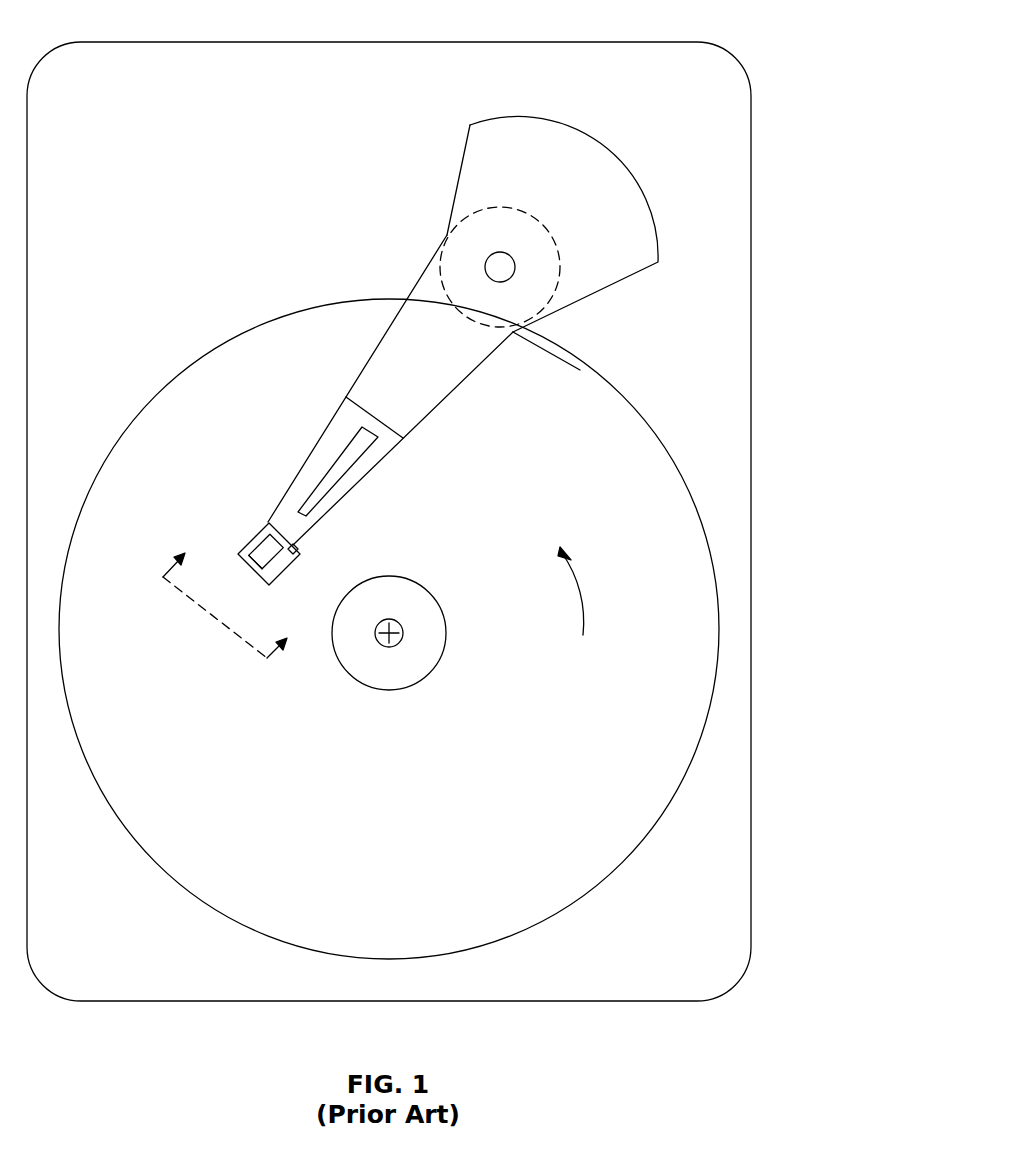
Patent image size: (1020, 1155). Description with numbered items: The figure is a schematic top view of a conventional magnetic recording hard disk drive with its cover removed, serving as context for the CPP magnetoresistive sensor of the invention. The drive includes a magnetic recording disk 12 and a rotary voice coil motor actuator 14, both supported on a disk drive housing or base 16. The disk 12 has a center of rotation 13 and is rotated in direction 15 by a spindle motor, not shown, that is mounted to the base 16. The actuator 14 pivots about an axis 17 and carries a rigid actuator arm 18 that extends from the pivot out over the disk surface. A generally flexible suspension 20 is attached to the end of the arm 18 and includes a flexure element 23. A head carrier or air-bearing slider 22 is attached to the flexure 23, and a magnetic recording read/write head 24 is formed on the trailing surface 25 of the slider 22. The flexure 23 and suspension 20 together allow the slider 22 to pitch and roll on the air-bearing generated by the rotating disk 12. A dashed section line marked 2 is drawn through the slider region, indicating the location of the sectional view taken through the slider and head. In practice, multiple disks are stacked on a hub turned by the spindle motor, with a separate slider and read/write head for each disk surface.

The magnetic recording disk 12 is at (369, 868).
The center of rotation 13 is at (403, 627).
The rotary voice coil motor (VCM) actuator 14 is at (598, 150).
The direction of rotation 15 is at (583, 605).
The disk drive housing or base 16 is at (636, 42).
The pivot axis 17 is at (486, 268).
The rigid actuator arm 18 is at (387, 353).
The suspension 20 is at (342, 432).
The air-bearing slider 22 is at (260, 523).
The flexure element 23 is at (296, 553).
The magnetic recording read/write head 24 is at (278, 562).
The trailing surface 25 is at (244, 562).
The section line 2- 2 is at (232, 592).